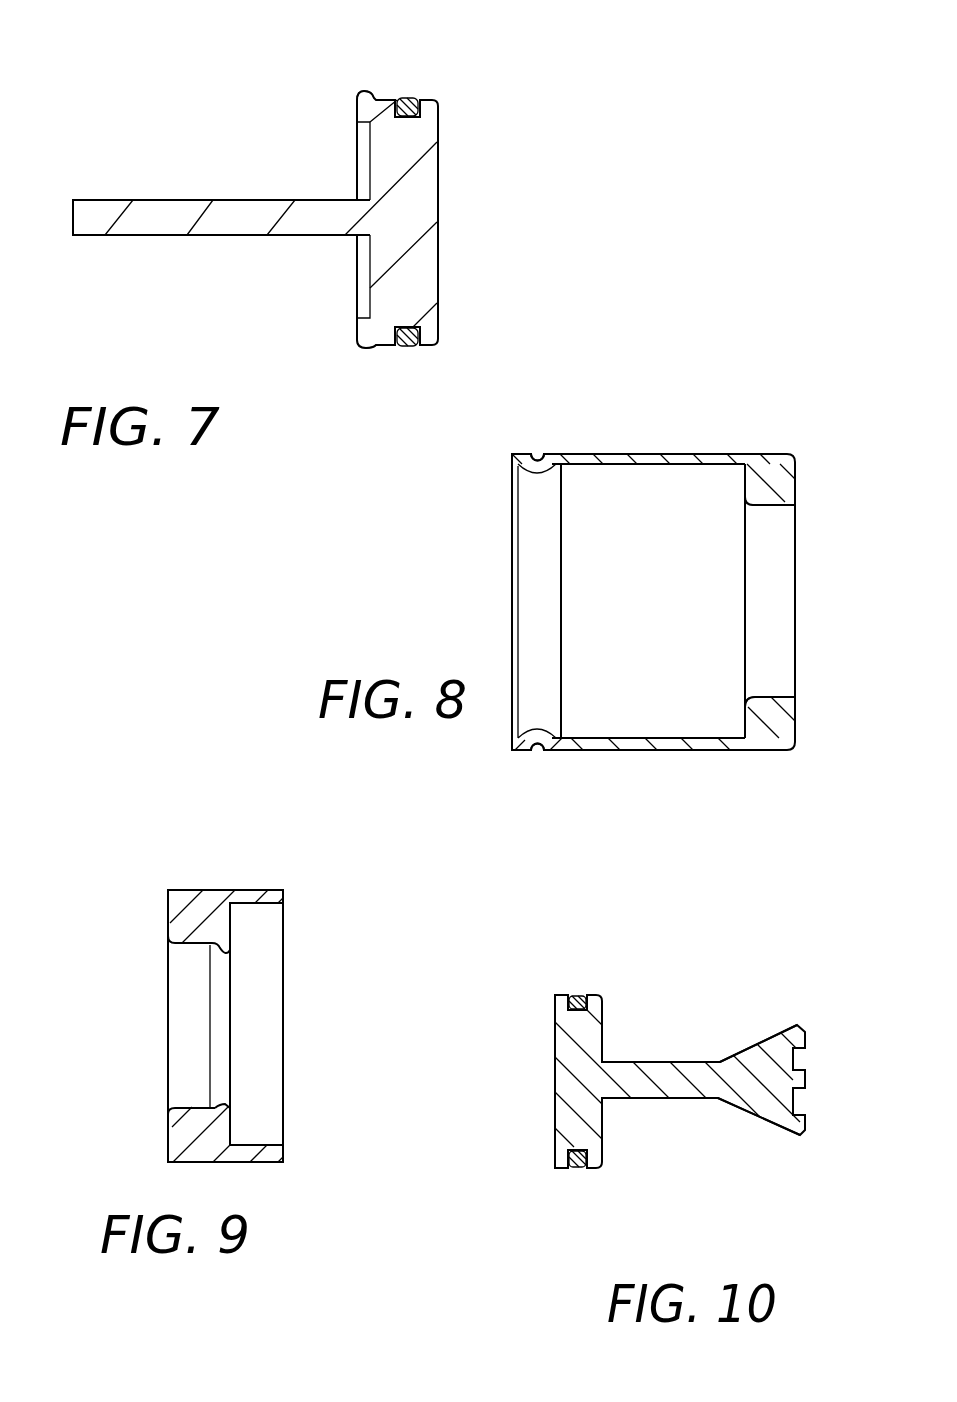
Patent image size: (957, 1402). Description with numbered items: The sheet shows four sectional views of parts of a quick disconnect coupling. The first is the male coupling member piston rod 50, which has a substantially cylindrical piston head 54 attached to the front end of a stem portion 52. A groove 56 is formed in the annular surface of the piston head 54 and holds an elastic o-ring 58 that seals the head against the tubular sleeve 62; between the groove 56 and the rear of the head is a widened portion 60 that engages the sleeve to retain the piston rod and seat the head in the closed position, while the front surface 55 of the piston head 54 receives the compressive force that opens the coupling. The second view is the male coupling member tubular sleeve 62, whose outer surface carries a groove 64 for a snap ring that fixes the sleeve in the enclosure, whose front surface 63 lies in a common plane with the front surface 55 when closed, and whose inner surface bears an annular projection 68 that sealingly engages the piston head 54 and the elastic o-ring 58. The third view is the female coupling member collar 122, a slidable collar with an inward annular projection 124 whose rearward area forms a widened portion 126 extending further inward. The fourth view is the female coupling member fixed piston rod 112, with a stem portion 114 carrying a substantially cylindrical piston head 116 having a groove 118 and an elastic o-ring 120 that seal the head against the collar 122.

In FIG. 7, the piston rod 50 is at (125, 88).
In FIG. 7, the stem portion 52 is at (192, 200).
In FIG. 7, the piston head 54 is at (432, 160).
In FIG. 7, the front surface 55 is at (438, 242).
In FIG. 7, the groove 56 is at (424, 93).
In FIG. 7, the elastic o-ring 58 is at (403, 96).
In FIG. 7, the widened portion 60 is at (363, 103).
In FIG. 8, the tubular sleeve 62 is at (660, 410).
In FIG. 8, the front surface 63 is at (797, 473).
In FIG. 8, the groove 64 is at (537, 453).
In FIG. 8, the annular projection 68 is at (768, 510).
In FIG. 9, the collar 122 is at (243, 866).
In FIG. 9, the annular projection 124 is at (172, 957).
In FIG. 9, the widened portion 126 is at (224, 948).
In FIG. 10, the fixed piston rod 112 is at (760, 982).
In FIG. 10, the stem portion 114 is at (688, 1100).
In FIG. 10, the piston head 116 is at (605, 1030).
In FIG. 10, the groove 118 is at (577, 992).
In FIG. 10, the elastic o-ring 120 is at (573, 992).